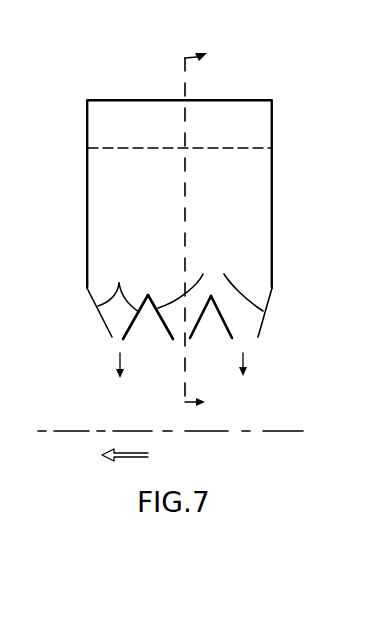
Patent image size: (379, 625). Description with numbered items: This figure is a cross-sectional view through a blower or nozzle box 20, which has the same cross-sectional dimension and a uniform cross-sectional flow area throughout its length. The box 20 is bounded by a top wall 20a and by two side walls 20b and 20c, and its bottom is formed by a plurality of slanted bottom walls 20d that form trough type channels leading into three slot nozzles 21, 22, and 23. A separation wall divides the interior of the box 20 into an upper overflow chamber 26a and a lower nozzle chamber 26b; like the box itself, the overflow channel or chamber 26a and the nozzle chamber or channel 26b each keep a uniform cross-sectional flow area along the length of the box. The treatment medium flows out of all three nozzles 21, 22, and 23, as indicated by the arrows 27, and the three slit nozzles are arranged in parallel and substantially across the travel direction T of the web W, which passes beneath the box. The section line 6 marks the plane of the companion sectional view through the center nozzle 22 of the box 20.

The nozzle box 20 is at (234, 58).
The top wall 20a is at (157, 99).
The side wall 20b is at (87, 247).
The side wall 20c is at (272, 197).
The slanted bottom walls 20d is at (119, 283).
The overflow chamber 26a is at (150, 138).
The nozzle chamber 26b is at (150, 205).
The slot nozzle 21 is at (115, 338).
The slot nozzle 22 is at (185, 341).
The slot nozzle 23 is at (243, 340).
The arrows 27 is at (121, 362).
The section line 6 is at (200, 220).
The travel direction T is at (110, 457).
The web W is at (297, 438).